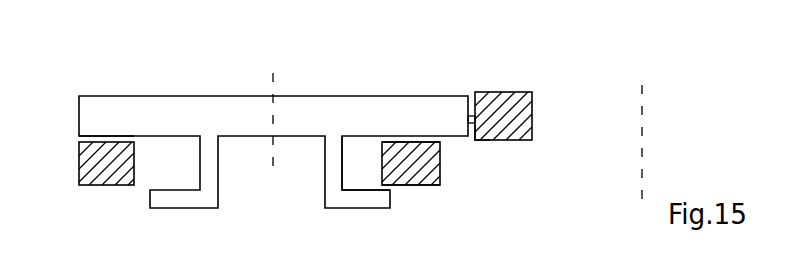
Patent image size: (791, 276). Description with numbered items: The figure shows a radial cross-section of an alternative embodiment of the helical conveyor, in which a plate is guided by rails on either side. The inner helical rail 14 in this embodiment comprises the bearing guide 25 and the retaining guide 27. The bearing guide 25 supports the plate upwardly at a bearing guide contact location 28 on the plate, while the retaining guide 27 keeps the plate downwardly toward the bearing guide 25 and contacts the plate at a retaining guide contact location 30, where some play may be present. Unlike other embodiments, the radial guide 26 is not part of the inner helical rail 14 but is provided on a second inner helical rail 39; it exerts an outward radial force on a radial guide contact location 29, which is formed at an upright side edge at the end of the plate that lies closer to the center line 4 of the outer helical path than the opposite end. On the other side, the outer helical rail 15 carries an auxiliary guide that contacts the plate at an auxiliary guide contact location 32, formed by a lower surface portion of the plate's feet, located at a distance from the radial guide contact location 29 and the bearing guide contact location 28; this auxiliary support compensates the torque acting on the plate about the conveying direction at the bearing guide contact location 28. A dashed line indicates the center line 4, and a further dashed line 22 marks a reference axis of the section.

The center line 4 is at (643, 135).
The inner helical rail 14 is at (417, 169).
The outer helical rail 15 is at (80, 167).
The center axis 22 is at (271, 89).
The bearing guide 25 is at (405, 140).
The radial guide 26 is at (470, 118).
The retaining guide 27 is at (402, 187).
The bearing guide contact location 28 is at (357, 137).
The radial guide contact location 29 is at (486, 124).
The retaining guide contact location 30 is at (361, 188).
The auxiliary guide contact location 32 is at (117, 137).
The second inner helical rail 39 is at (523, 128).